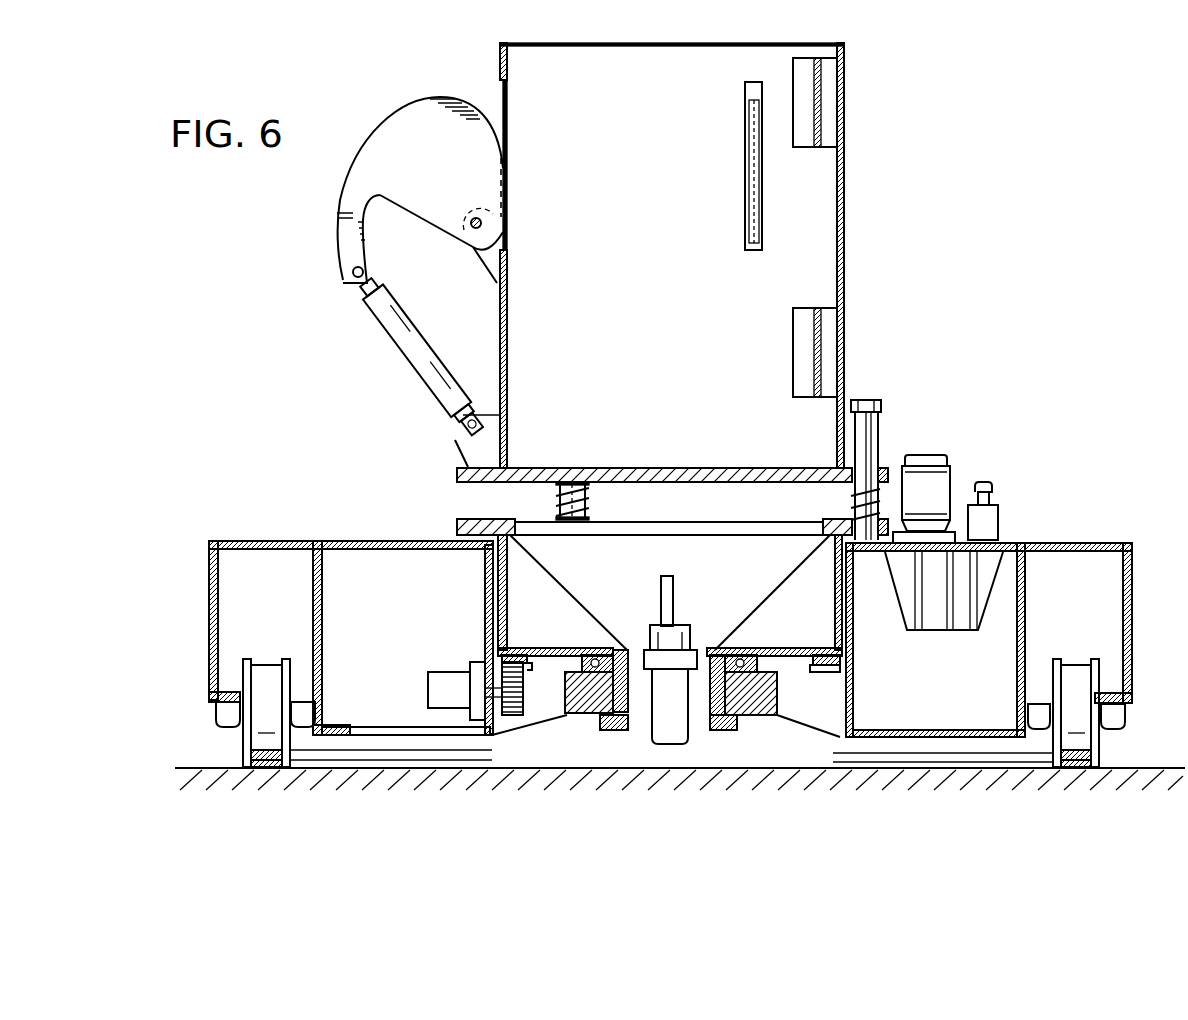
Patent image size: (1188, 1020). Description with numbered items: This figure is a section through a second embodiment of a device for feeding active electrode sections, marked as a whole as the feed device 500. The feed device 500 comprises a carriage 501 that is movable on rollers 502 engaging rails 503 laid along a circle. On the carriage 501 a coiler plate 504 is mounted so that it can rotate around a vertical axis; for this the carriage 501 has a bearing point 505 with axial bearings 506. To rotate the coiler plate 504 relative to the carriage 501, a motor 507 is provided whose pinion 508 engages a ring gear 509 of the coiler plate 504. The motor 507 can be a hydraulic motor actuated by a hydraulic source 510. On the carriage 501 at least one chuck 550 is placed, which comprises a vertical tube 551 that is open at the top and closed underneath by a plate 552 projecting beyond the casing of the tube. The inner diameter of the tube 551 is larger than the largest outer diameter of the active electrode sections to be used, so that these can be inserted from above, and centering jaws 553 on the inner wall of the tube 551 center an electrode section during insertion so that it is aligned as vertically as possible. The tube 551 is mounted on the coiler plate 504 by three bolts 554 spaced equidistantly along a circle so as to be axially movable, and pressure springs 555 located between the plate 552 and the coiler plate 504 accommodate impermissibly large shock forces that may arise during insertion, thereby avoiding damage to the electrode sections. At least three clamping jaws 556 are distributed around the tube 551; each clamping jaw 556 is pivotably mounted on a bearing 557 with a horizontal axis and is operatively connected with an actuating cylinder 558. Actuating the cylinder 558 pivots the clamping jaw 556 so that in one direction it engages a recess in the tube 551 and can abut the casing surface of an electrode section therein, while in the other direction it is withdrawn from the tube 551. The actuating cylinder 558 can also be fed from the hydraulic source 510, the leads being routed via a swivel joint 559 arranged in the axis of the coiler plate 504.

The feed device 500 is at (1046, 382).
The carriage 501 is at (215, 607).
The rollers 502 is at (265, 680).
The rails 503 is at (268, 752).
The coiler plate 504 is at (465, 521).
The bearing point 505 is at (765, 710).
The axial bearings 506 is at (745, 662).
The motor 507 is at (447, 685).
The pinion 508 is at (520, 700).
The ring gear 509 is at (517, 656).
The hydraulic source 510 is at (938, 478).
The chuck 550 is at (910, 157).
The vertical tube 551 is at (846, 235).
The plate 552 is at (457, 478).
The centering jaws 553 is at (818, 97).
The bolts 554 is at (560, 505).
The pressure springs 555 is at (588, 500).
The clamping jaws 556 is at (400, 128).
The bearing 557 is at (498, 232).
The actuating cylinder 558 is at (372, 312).
The swivel joint 559 is at (677, 733).